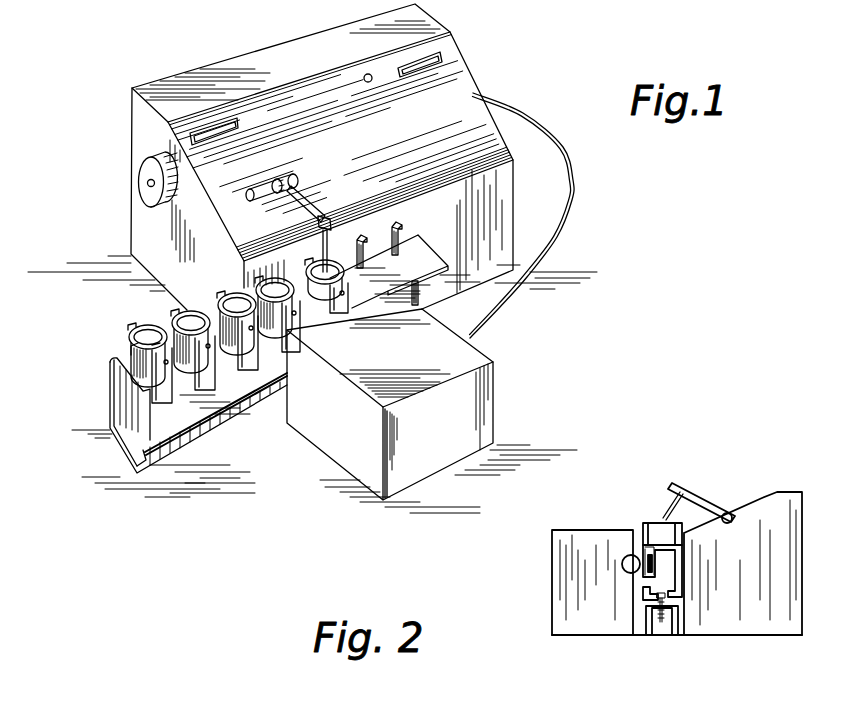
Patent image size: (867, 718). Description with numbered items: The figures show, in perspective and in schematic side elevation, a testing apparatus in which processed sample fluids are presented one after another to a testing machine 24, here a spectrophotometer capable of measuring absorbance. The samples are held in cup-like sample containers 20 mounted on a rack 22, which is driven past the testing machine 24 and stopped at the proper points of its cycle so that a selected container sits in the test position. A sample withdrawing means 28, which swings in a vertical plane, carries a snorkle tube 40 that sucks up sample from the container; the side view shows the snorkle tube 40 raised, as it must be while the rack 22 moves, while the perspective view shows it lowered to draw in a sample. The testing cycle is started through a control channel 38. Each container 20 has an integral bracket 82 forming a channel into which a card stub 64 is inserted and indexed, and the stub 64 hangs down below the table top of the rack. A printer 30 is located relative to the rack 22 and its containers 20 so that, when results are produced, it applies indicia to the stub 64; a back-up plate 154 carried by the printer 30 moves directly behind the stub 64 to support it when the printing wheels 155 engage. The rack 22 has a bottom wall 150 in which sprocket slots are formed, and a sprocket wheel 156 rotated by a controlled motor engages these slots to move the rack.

In FIG. 1, the sample container 20 is at (128, 340).
In FIG. 2, the sample container 20 is at (653, 523).
In FIG. 1, the rack 22 is at (121, 447).
In FIG. 2, the rack 22 is at (645, 594).
In FIG. 1, the testing machine 24 is at (203, 82).
In FIG. 2, the testing machine 24 is at (794, 491).
In FIG. 1, the sample withdrawing means 28 is at (318, 190).
In FIG. 2, the sample withdrawing means 28 is at (694, 492).
In FIG. 1, the printer 30 is at (327, 437).
In FIG. 2, the printer 30 is at (567, 597).
In FIG. 1, the control channel 38 is at (575, 199).
In FIG. 1, the snorkle tube 40 is at (342, 233).
In FIG. 2, the snorkle tube 40 is at (657, 523).
In FIG. 2, the stub 64 is at (640, 544).
In FIG. 1, the bracket 82 is at (148, 352).
In FIG. 2, the bottom wall 150 is at (648, 600).
In FIG. 1, the back-up plate 154 is at (263, 372).
In FIG. 2, the back-up plate 154 is at (652, 566).
In FIG. 2, the printing wheels 155 is at (622, 560).
In FIG. 2, the sprocket wheel 156 is at (658, 598).